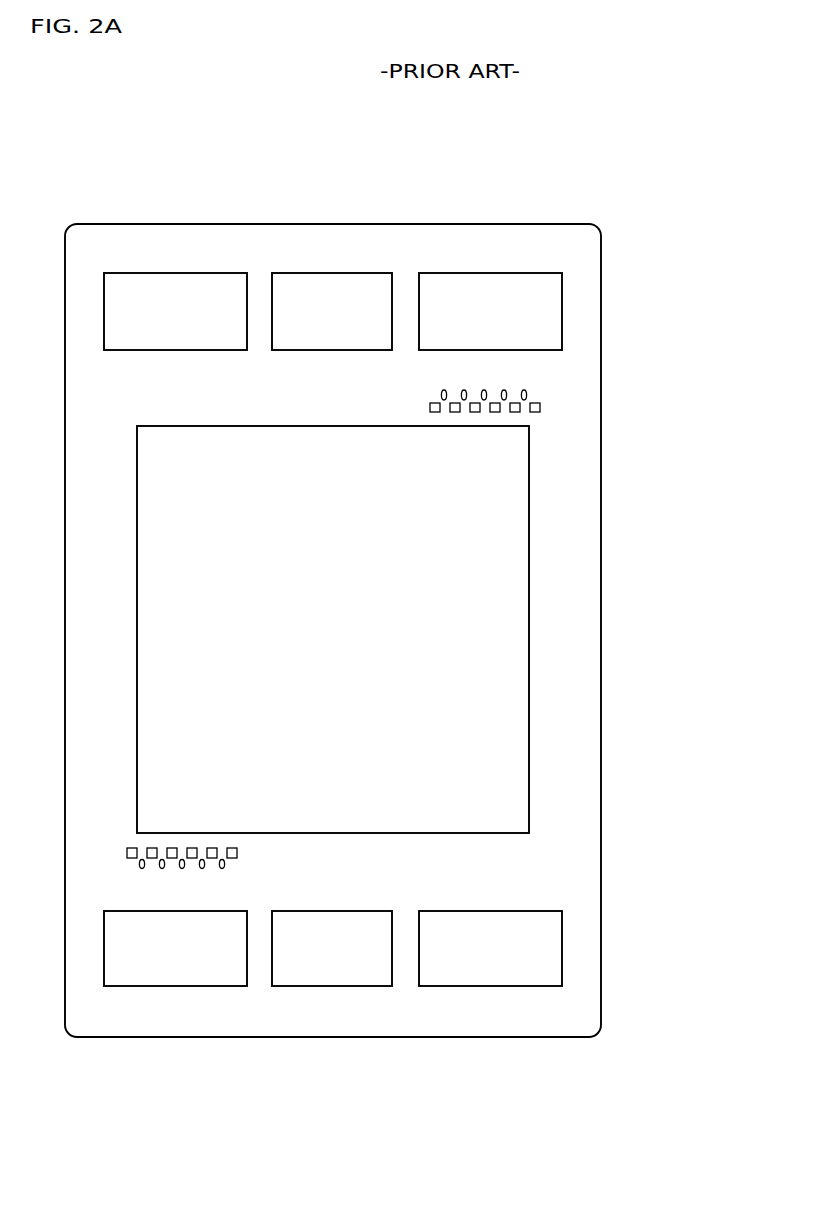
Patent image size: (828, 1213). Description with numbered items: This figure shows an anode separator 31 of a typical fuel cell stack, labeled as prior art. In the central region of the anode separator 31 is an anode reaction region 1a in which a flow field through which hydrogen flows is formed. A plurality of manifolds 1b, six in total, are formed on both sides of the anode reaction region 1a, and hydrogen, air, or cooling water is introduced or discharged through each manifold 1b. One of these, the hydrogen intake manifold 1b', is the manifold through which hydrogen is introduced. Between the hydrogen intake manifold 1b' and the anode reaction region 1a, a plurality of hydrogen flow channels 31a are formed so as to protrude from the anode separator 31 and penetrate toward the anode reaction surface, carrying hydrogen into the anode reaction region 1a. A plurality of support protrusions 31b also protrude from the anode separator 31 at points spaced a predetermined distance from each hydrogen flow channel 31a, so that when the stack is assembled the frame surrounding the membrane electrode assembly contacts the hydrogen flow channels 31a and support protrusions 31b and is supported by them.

The anode separator 31 is at (101, 207).
The anode reaction region 1a is at (529, 630).
The manifolds 1b is at (406, 563).
The hydrogen intake manifold 1b' is at (501, 245).
The hydrogen flow channels 31a is at (508, 390).
The support protrusions 31b is at (518, 411).